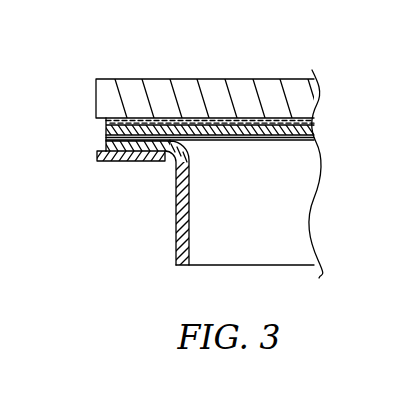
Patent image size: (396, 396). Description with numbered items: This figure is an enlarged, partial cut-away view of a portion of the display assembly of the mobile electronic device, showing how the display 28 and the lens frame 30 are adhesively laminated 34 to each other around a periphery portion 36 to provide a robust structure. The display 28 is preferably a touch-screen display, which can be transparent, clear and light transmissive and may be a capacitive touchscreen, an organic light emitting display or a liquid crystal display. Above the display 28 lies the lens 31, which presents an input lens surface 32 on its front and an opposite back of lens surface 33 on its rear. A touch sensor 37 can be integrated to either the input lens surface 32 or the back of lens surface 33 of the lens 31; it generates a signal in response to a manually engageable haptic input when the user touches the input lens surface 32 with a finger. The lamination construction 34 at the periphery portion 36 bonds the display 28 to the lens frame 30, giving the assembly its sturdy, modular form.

The display 28 is at (203, 148).
The lens frame 30 is at (141, 150).
The lens 31 is at (163, 92).
The input lens surface 32 is at (273, 79).
The back of lens surface 33 is at (314, 122).
The lamination construction 34 is at (90, 148).
The periphery portion 36 is at (110, 209).
The touch sensor 37 is at (110, 130).